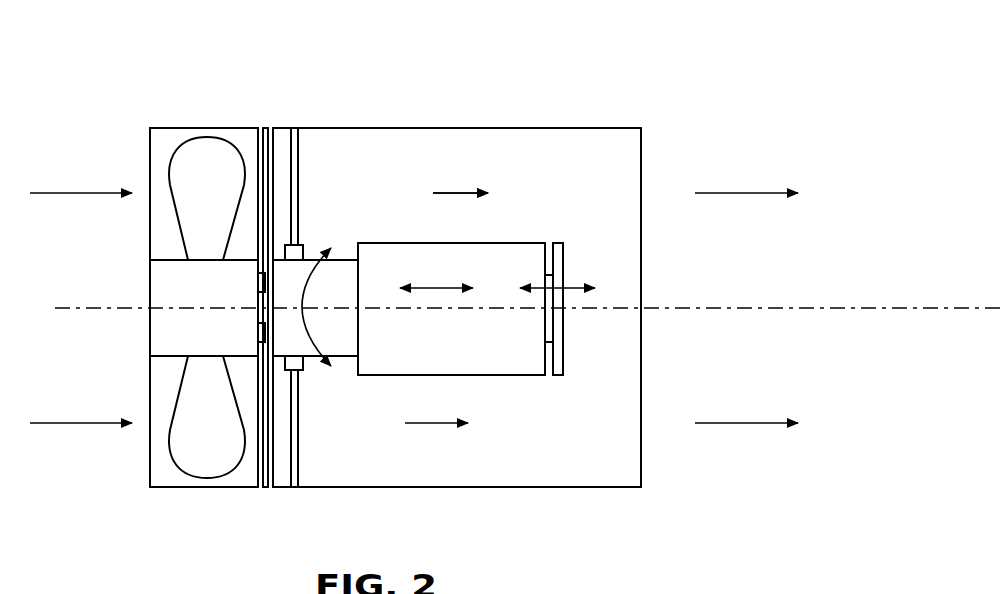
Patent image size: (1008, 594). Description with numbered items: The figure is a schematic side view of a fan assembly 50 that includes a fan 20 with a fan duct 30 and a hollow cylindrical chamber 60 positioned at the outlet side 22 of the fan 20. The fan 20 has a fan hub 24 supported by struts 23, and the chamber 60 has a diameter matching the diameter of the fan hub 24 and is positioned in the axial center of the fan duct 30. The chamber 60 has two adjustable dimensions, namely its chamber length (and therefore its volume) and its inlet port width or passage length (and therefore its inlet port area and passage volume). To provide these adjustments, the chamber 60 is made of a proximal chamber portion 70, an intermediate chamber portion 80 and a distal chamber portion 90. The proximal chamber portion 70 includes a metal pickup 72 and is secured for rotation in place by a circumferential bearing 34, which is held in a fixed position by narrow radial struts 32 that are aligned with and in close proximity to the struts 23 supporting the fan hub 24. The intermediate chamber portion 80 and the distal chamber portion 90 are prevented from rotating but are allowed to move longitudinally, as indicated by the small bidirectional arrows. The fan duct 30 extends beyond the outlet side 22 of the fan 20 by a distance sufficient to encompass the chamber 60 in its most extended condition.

The fan assembly 50 is at (86, 92).
The fan 20 is at (193, 127).
The struts 23 is at (258, 149).
The outlet side 22 is at (276, 149).
The narrow radial struts 32 is at (303, 149).
The fan duct 30 is at (477, 128).
The hollow cylindrical chamber 60 is at (411, 211).
The metal pickup 72 is at (297, 229).
The proximal chamber portion 70 is at (345, 246).
The intermediate chamber portion 80 is at (487, 241).
The distal chamber portion 90 is at (562, 241).
The fan hub 24 is at (193, 277).
The circumferential bearing 34 is at (305, 371).